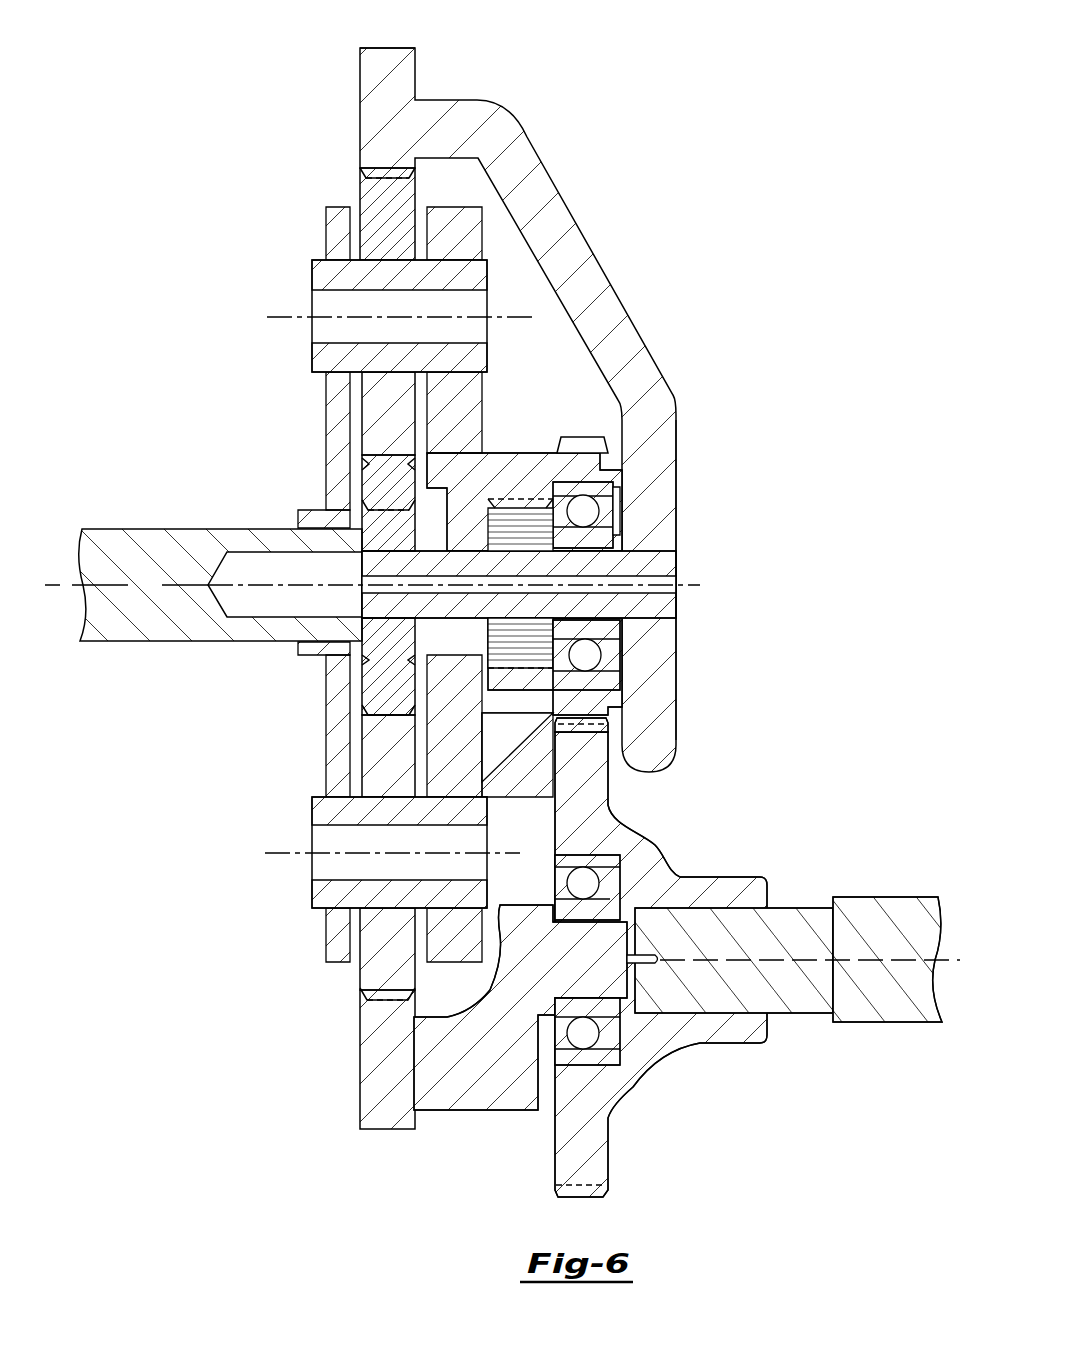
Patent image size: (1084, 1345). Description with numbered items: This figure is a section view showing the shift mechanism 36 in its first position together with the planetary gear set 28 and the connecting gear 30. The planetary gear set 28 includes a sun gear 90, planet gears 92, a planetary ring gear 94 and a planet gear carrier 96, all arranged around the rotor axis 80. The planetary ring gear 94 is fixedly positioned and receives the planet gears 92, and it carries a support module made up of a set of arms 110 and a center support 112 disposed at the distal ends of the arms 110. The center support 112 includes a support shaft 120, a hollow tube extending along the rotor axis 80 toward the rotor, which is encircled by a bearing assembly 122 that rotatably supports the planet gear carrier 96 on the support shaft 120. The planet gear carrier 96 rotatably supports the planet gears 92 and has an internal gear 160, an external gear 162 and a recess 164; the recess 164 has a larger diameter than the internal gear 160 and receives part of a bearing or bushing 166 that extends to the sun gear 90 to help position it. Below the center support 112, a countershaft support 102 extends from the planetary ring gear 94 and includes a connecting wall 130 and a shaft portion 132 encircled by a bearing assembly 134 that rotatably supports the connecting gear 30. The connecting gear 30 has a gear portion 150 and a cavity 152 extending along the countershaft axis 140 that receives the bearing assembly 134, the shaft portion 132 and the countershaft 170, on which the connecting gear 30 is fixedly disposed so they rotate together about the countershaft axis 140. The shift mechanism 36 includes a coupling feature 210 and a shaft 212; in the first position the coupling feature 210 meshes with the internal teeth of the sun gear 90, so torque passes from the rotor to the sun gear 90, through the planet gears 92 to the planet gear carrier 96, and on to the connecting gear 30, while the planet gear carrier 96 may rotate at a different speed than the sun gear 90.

The planetary gear set 28 is at (386, 40).
The connecting gear 30 is at (617, 1100).
The shift mechanism 36 is at (212, 528).
The rotor axis 80 is at (676, 583).
The sun gear 90 is at (360, 495).
The planet gears 92 is at (360, 200).
The planetary ring gear 94 is at (358, 1085).
The planet gear carrier 96 is at (458, 207).
The countershaft support 102 is at (515, 1118).
The set of arms 110 is at (553, 182).
The center support 112 is at (677, 467).
The support shaft 120 is at (362, 603).
The bearing assembly 122 is at (610, 678).
The connecting wall 130 is at (484, 1058).
The shaft portion 132 is at (612, 935).
The bearing assembly 134 is at (636, 908).
The countershaft axis 140 is at (950, 1025).
The gear portion 150 is at (565, 1197).
The cavity 152 is at (770, 920).
The internal gear 160 is at (518, 553).
The external gear 162 is at (593, 437).
The recess 164 is at (445, 512).
The bearing or bushing 166 is at (427, 668).
The countershaft 170 is at (895, 897).
The coupling feature 210 is at (368, 518).
The shaft 212 is at (159, 598).